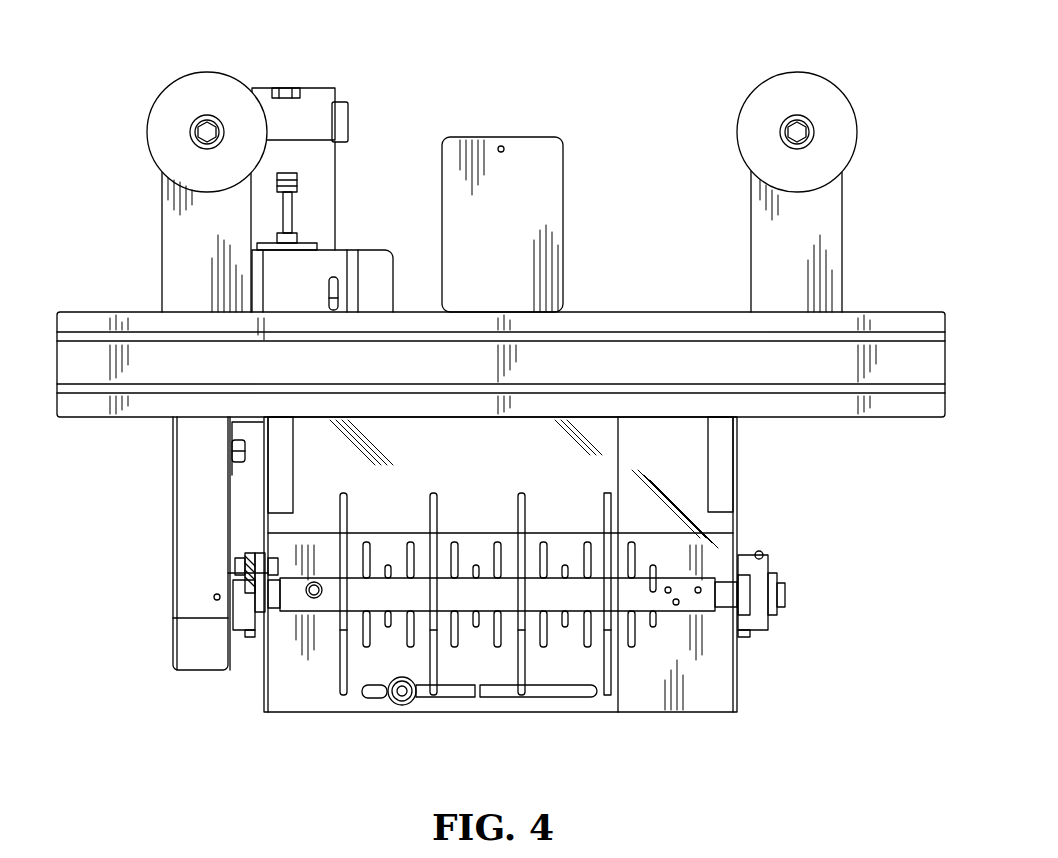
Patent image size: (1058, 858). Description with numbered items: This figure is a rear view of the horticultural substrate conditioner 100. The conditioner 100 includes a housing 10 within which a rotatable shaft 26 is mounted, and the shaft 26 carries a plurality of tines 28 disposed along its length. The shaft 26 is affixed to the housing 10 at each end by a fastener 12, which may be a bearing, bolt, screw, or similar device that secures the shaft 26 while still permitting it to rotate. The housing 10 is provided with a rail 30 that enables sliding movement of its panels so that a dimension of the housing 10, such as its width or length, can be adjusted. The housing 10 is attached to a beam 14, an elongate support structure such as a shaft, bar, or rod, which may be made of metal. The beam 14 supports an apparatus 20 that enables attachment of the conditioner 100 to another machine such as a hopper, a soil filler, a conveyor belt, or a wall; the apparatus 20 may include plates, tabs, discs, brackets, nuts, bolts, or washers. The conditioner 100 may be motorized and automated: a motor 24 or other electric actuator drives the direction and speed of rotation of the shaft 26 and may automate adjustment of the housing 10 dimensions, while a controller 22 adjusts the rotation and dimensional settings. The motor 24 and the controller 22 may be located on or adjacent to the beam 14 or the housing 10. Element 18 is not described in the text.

The horticultural substrate conditioner 100 is at (872, 527).
The housing 10 is at (738, 508).
The fastener 12 is at (787, 593).
The beam 14 is at (95, 312).
The roller wheel 18 is at (797, 72).
The apparatus 20 is at (843, 232).
The controller 22 is at (505, 137).
The motor 24 is at (318, 88).
The shaft 26 is at (688, 607).
The tines 28 is at (338, 668).
The rail 30 is at (467, 698).